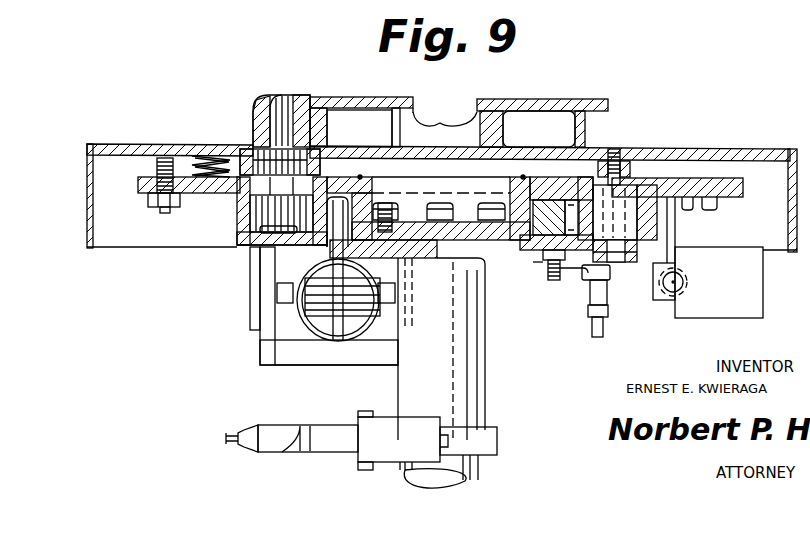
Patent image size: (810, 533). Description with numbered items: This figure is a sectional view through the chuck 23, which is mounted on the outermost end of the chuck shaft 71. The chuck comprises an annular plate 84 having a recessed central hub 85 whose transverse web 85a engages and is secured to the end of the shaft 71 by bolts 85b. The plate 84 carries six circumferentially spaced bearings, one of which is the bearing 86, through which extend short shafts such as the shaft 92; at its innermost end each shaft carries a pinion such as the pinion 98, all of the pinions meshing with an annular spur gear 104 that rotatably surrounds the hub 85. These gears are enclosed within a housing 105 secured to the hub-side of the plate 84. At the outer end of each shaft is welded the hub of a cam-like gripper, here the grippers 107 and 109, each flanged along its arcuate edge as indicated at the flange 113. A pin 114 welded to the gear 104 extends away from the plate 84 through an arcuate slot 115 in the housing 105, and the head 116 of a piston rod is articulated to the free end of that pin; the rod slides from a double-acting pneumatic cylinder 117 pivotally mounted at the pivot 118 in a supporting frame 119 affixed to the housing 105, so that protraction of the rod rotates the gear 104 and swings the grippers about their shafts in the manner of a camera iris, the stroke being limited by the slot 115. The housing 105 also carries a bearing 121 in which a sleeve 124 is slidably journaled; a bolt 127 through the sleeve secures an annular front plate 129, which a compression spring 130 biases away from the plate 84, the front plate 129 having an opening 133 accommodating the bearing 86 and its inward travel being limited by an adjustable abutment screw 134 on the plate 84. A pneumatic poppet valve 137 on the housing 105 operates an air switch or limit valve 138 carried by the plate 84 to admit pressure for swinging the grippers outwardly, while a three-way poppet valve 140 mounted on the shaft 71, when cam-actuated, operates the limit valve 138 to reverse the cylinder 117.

The indexing head assembly 23 is at (221, 102).
The shaft 71 is at (477, 396).
The annular plate 84 is at (737, 194).
The recessed central hub 85 is at (361, 177).
The transverse web 85a is at (487, 259).
The bolts 85b is at (483, 203).
The bearing 86 is at (272, 185).
The short shaft 92 is at (283, 118).
The pinion 98 is at (237, 248).
The annular spur gear 104 is at (553, 240).
The housing 105 is at (233, 218).
The gripper 107 is at (346, 100).
The gripper 109 is at (549, 100).
The flange 113 is at (451, 108).
The pin 114 is at (335, 262).
The arcuate slot 115 is at (324, 254).
The head of piston rod 116 is at (300, 305).
The double-acting pneumatic cylinder 117 is at (360, 318).
The pivot mounting 118 is at (332, 350).
The supporting frame 119 is at (265, 352).
The bearing 121 is at (630, 193).
The sleeve 124 is at (590, 178).
The bolt 127 is at (618, 258).
The annular front plate 129 is at (720, 150).
The compression spring 130 is at (208, 157).
The opening 133 is at (313, 144).
The adjustable abutment screw 134 is at (156, 167).
The pneumatic poppet valve 137 is at (603, 302).
The air switch or limit valve 138 is at (715, 310).
The three-way poppet valve 140 is at (270, 443).